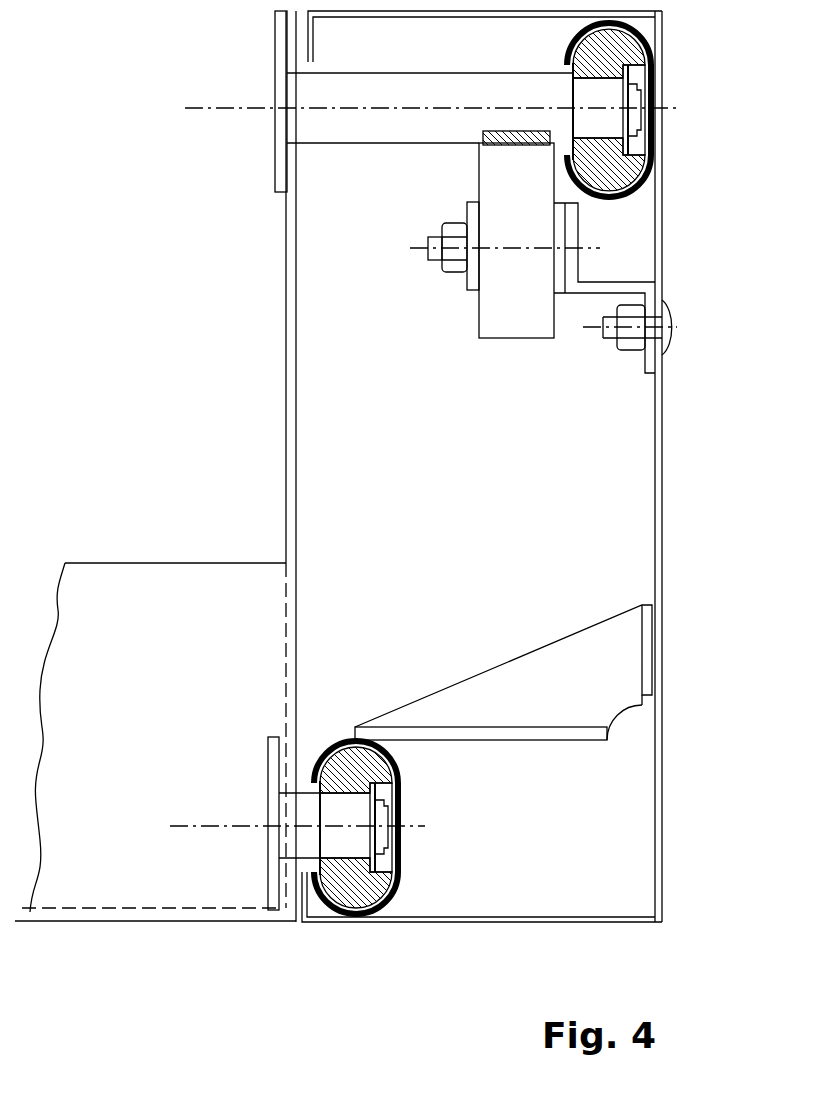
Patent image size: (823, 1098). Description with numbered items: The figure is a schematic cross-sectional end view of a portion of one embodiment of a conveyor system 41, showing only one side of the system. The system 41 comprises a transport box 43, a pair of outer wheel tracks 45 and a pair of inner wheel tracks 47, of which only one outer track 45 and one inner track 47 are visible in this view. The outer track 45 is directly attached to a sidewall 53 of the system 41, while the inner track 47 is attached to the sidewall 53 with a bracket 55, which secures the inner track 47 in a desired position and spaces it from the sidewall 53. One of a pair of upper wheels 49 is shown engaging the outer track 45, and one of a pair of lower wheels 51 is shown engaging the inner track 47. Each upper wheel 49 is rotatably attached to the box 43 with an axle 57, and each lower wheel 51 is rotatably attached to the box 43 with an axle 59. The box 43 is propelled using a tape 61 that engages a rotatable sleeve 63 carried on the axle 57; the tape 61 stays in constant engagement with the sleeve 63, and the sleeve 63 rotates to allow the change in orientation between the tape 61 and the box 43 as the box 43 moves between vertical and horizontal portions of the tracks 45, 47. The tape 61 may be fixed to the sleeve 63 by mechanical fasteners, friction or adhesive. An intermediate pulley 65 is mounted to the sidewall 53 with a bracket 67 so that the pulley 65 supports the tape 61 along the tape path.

The conveyor system 41 is at (705, 443).
The transport box 43 is at (296, 447).
The outer wheel track 45 is at (633, 141).
The inner wheel track 47 is at (351, 880).
The upper wheel 49 is at (647, 188).
The lower wheel 51 is at (348, 884).
The sidewall 53 is at (662, 538).
The bracket 55 is at (527, 690).
The axle 57 is at (593, 97).
The axle 59 is at (330, 812).
The tape 61 is at (478, 135).
The rotatable sleeve 63 is at (372, 128).
The intermediate pulley 65 is at (508, 320).
The bracket 67 is at (587, 292).